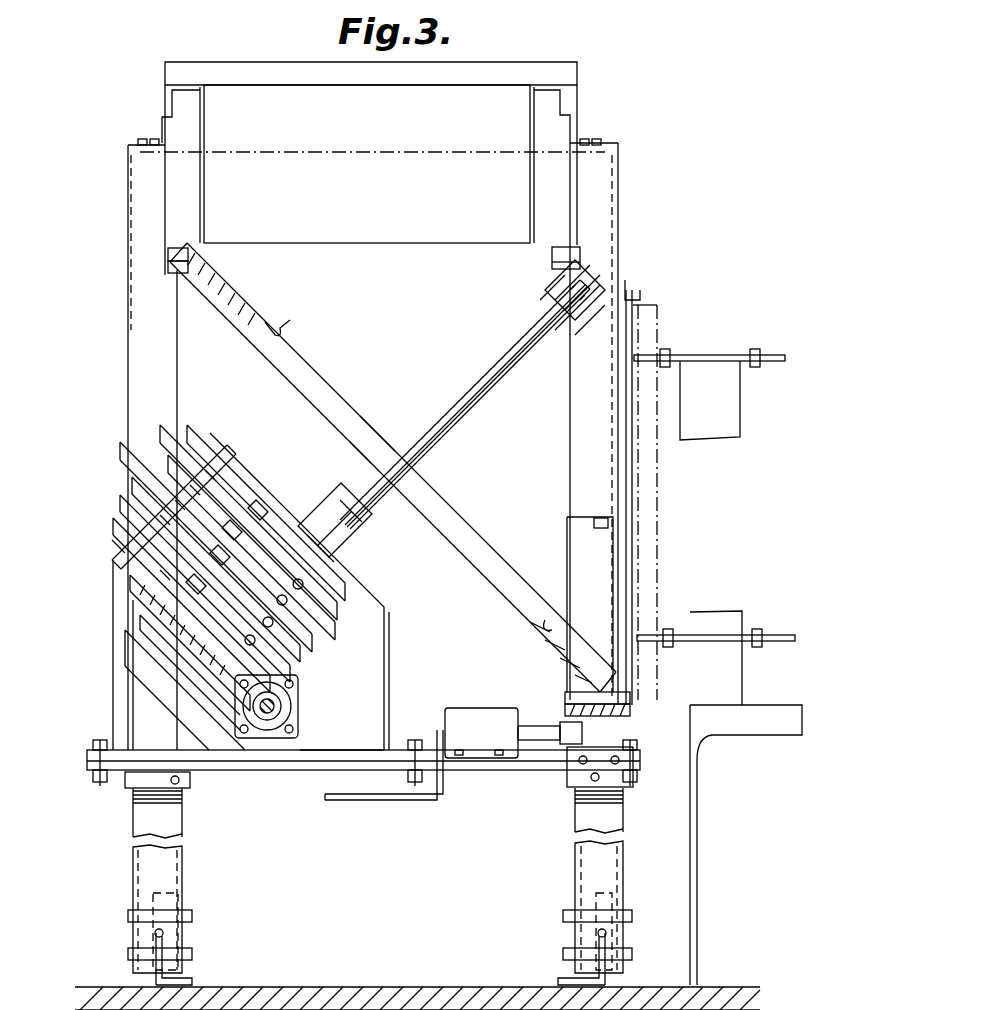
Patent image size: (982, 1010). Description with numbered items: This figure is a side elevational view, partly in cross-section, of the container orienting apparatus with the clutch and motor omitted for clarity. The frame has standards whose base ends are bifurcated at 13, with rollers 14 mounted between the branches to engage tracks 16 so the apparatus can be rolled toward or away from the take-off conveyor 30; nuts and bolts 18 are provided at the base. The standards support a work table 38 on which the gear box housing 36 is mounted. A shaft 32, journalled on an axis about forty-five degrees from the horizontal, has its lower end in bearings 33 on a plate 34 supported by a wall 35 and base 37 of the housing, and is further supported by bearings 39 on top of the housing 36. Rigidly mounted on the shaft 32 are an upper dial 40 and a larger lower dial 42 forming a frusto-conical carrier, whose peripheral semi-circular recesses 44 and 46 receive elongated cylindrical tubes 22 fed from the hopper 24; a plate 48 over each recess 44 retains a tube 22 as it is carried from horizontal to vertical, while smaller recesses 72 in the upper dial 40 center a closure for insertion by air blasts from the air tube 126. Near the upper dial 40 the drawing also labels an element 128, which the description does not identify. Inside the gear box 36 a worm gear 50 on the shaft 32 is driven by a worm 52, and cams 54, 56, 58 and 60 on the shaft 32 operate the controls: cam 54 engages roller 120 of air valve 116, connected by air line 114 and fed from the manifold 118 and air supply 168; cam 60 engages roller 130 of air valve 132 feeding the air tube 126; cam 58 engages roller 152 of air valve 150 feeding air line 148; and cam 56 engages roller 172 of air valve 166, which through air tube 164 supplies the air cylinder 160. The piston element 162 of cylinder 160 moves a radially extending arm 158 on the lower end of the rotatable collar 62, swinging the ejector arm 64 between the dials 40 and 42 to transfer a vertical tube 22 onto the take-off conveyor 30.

The bifurcated base end 13 is at (166, 940).
The roller 14 is at (165, 903).
The track 16 is at (152, 980).
The nuts and bolts 18 is at (133, 955).
The elongated cylindrical tube 22 is at (660, 475).
The hopper 24 is at (353, 141).
The take-off conveyor 30 is at (665, 357).
The shaft 32 is at (425, 432).
The bearings 33 is at (150, 640).
The plate 34 is at (125, 628).
The wall 35 is at (127, 664).
The gear box housing 36 is at (398, 658).
The base 37 is at (318, 750).
The work table 38 is at (520, 773).
The bearings 39 is at (330, 498).
The upper dial 40 is at (572, 322).
The lower dial 42 is at (475, 532).
The semi-circular recesses 44 is at (168, 264).
The semi-circular recesses 46 is at (552, 256).
The plate 48 is at (168, 272).
The worm gear 50 is at (165, 620).
The worm 52 is at (282, 707).
The cam 54 is at (290, 684).
The cam 56 is at (312, 660).
The cam 58 is at (337, 640).
The cam 60 is at (345, 615).
The rotatable collar 62 is at (566, 568).
The ejector arm 64 is at (600, 522).
The recesses 72 is at (560, 262).
The air line 114 is at (112, 535).
The air valve 116 is at (160, 578).
The manifold 118 is at (248, 470).
The cam follower roller 120 is at (196, 590).
The air tube 126 is at (198, 437).
The plate 128 is at (575, 263).
The cam follower roller 130 is at (258, 516).
The air valve 132 is at (175, 440).
The air line 148 is at (170, 457).
The air valve 150 is at (132, 480).
The cam follower roller 152 is at (236, 538).
The radially extending arm 158 is at (605, 745).
The air cylinder 160 is at (468, 706).
The piston element 162 is at (578, 758).
The air tube 164 is at (120, 493).
The air valve 166 is at (113, 520).
The source of air supply 168 is at (115, 448).
The cam follower roller 172 is at (219, 562).